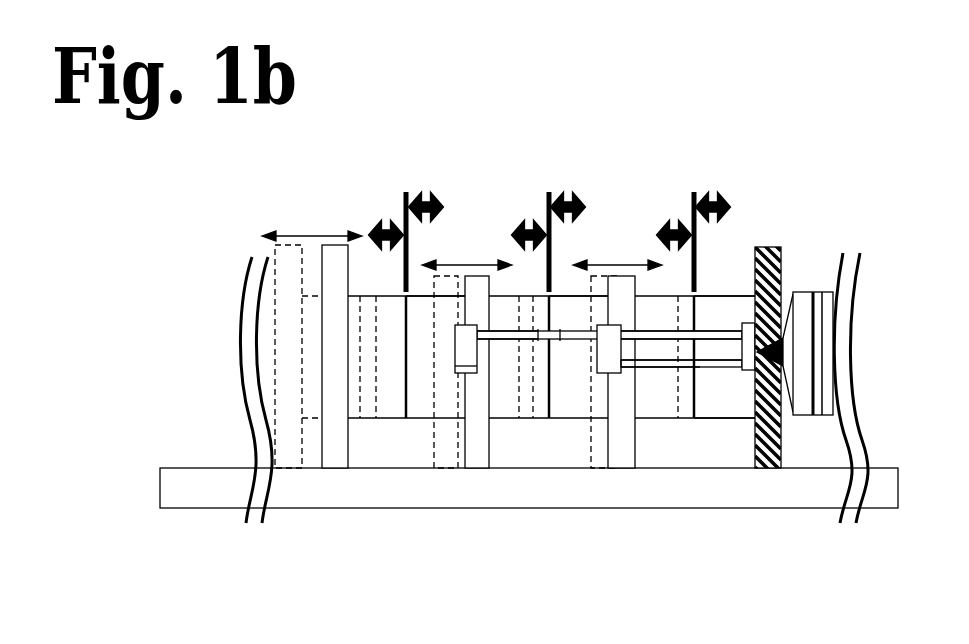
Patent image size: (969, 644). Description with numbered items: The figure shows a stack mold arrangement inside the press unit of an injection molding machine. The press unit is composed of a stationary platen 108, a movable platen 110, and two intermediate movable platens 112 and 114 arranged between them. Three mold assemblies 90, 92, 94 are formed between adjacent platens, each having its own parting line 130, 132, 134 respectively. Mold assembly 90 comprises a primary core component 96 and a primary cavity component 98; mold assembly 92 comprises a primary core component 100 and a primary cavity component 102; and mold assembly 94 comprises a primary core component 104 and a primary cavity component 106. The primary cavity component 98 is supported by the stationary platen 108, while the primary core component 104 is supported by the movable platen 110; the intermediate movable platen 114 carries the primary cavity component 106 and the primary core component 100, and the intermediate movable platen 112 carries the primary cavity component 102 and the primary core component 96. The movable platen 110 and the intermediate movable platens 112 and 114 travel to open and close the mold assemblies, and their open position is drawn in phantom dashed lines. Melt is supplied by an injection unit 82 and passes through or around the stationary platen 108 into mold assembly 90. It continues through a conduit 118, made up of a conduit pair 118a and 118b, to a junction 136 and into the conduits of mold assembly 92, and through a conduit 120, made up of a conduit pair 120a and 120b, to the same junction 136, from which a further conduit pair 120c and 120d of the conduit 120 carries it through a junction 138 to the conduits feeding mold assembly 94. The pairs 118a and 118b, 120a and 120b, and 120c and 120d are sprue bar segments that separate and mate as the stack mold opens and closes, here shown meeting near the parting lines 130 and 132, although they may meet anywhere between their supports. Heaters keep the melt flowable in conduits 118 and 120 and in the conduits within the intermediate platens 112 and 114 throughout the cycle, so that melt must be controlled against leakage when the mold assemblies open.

The injection unit 82 is at (828, 385).
The mold assembly 90 is at (710, 246).
The mold assembly 92 is at (563, 241).
The mold assembly 94 is at (425, 246).
The primary core component 96 is at (657, 402).
The primary cavity component 98 is at (725, 400).
The primary core component 100 is at (540, 405).
The primary cavity component 102 is at (590, 413).
The primary core component 104 is at (402, 407).
The primary cavity component 106 is at (443, 410).
The stationary platen 108 is at (766, 266).
The movable platen 110 is at (343, 256).
The intermediate movable platen 112 is at (630, 288).
The intermediate movable platen 114 is at (483, 286).
The conduit 118 is at (842, 542).
The conduit segment 118a is at (725, 366).
The conduit segment 118b is at (670, 366).
The conduit 120 is at (483, 538).
The conduit segment 120a is at (722, 332).
The conduit segment 120b is at (651, 337).
The conduit segment 120c is at (575, 335).
The conduit segment 120d is at (508, 335).
The parting line 130 is at (694, 192).
The parting line 132 is at (549, 192).
The parting line 134 is at (406, 192).
The junction 136 is at (602, 372).
The junction 138 is at (459, 366).